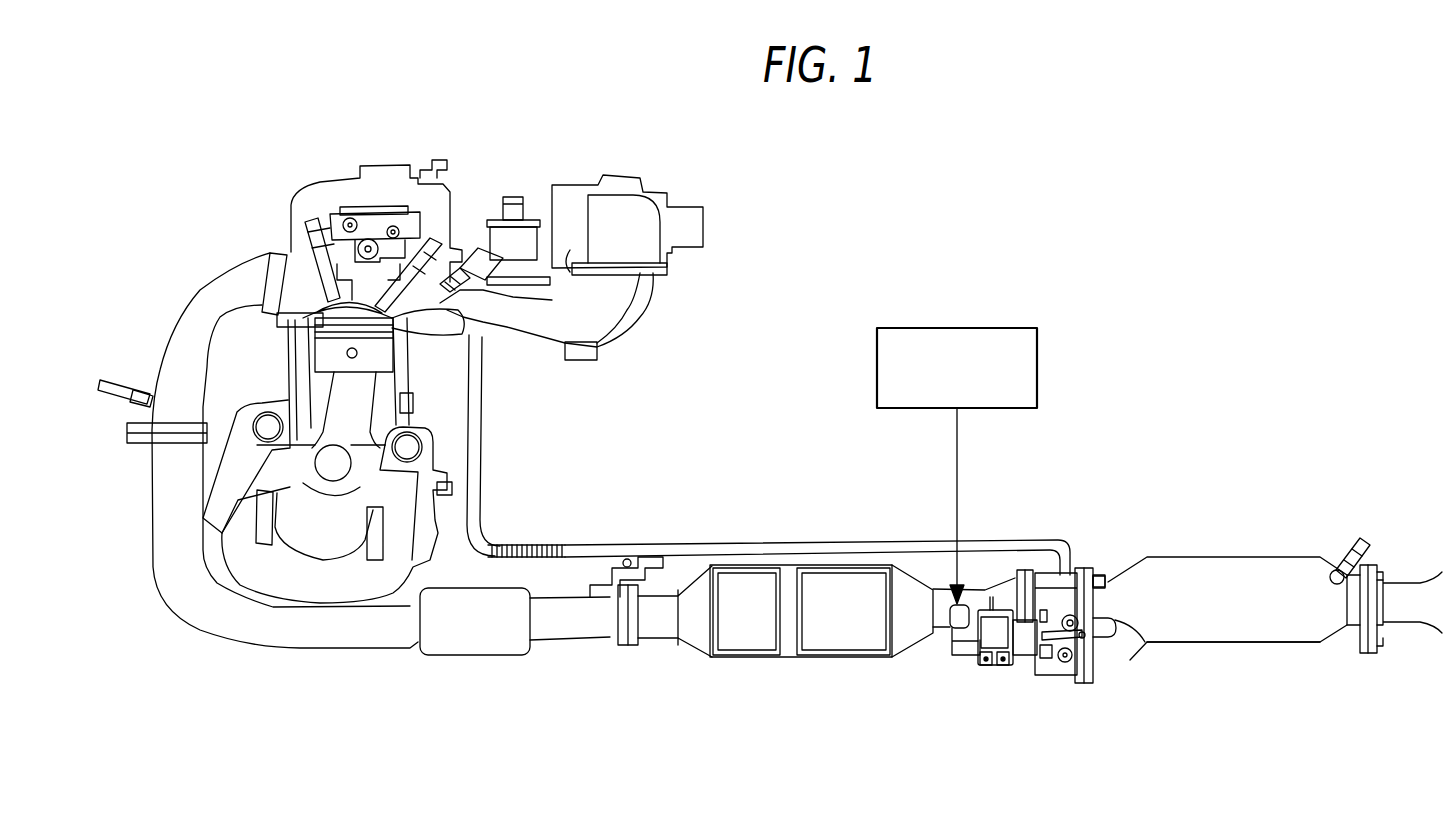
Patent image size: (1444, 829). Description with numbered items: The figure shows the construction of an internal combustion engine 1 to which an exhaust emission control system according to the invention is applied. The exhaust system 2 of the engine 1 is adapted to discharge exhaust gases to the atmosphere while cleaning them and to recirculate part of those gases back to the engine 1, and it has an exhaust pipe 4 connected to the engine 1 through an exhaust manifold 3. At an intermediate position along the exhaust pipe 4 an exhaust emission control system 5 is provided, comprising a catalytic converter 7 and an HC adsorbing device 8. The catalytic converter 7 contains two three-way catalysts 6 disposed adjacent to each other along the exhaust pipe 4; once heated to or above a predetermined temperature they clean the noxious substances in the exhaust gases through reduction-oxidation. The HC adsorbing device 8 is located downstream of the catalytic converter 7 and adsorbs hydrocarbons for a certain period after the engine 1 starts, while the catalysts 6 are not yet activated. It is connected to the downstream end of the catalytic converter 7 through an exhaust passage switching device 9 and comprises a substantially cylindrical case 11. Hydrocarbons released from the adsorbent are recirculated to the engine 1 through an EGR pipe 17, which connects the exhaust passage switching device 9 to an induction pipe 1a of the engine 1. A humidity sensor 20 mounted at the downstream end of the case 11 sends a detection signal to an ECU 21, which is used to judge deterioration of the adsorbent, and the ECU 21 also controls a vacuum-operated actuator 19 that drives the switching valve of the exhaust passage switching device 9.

The internal combustion engine 1 is at (315, 140).
The induction pipe 1a is at (507, 320).
The exhaust system 2 is at (1138, 250).
The exhaust manifold 3 is at (267, 258).
The exhaust pipe 4 is at (227, 640).
The exhaust emission control system 5 is at (1137, 478).
The three-way catalysts 6 is at (823, 647).
The catalytic converter 7 is at (752, 735).
The HC adsorbing device 8 is at (1245, 542).
The exhaust passage switching device 9 is at (1038, 555).
The case 11 is at (1247, 643).
The EGR pipe 17 is at (913, 540).
The actuator 19 is at (995, 640).
The humidity sensor 20 is at (1352, 537).
The ECU 21 is at (1038, 345).